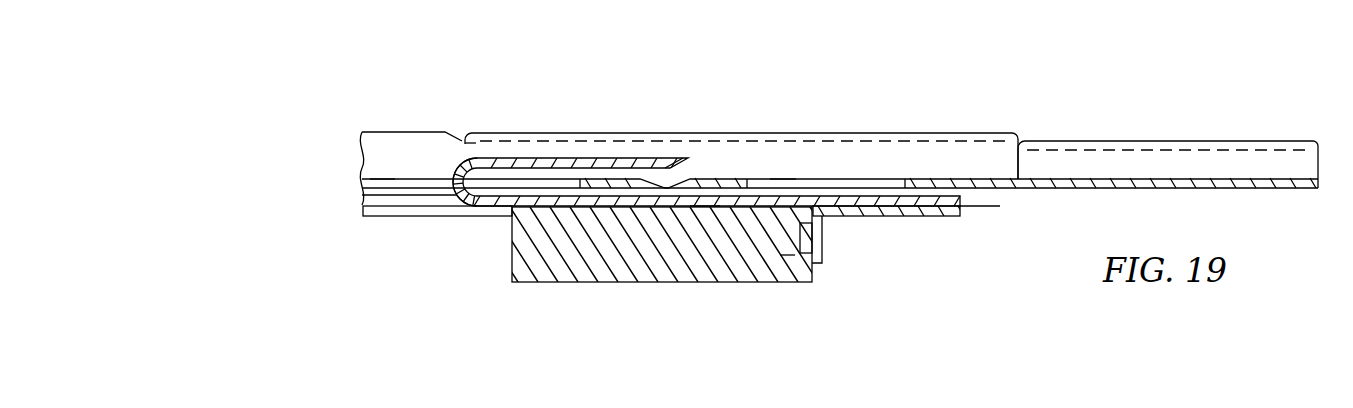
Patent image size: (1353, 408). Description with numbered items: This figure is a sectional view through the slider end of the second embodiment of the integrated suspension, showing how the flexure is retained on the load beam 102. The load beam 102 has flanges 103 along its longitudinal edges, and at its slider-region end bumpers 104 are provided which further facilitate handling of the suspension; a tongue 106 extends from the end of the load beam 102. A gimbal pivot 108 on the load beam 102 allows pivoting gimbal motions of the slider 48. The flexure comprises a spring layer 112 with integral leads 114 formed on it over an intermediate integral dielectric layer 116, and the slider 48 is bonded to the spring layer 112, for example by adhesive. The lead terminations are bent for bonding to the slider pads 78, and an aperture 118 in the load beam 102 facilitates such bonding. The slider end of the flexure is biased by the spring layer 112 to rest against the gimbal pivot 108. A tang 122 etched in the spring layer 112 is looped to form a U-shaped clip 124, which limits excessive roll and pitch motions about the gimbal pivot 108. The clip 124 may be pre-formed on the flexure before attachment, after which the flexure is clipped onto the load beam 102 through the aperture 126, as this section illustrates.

The slider 48 is at (520, 252).
The slider pads 78 is at (787, 255).
The load beam 102 is at (368, 180).
The flanges 103 is at (376, 139).
The bumpers 104 is at (826, 132).
The tongue 106 is at (1168, 140).
The gimbal pivot 108 is at (702, 207).
The spring layer 112 is at (925, 195).
The integral leads 114 is at (823, 245).
The integral dielectric layer 116 is at (410, 206).
The aperture 118 is at (783, 168).
The tang 122 is at (578, 158).
The U-shaped clip 124 is at (456, 154).
The aperture 126 is at (387, 175).